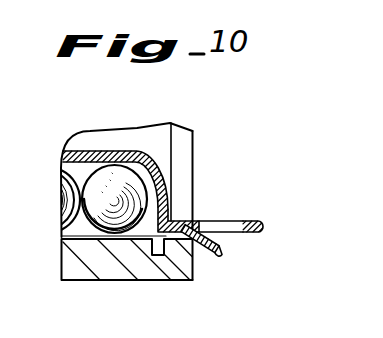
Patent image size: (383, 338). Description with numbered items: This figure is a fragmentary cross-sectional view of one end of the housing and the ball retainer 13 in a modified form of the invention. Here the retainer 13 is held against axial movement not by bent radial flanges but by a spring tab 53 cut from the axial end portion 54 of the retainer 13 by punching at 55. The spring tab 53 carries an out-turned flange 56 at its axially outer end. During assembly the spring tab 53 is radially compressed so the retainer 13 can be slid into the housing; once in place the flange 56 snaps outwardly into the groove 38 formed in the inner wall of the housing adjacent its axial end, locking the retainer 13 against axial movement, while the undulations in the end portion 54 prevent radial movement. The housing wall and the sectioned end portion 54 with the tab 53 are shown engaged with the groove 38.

The retainer 13 is at (88, 161).
The groove 38 is at (167, 281).
The spring tab 53 is at (203, 222).
The end portion 54 is at (259, 223).
The punching 55 is at (231, 222).
The out-turned flange 56 is at (222, 251).